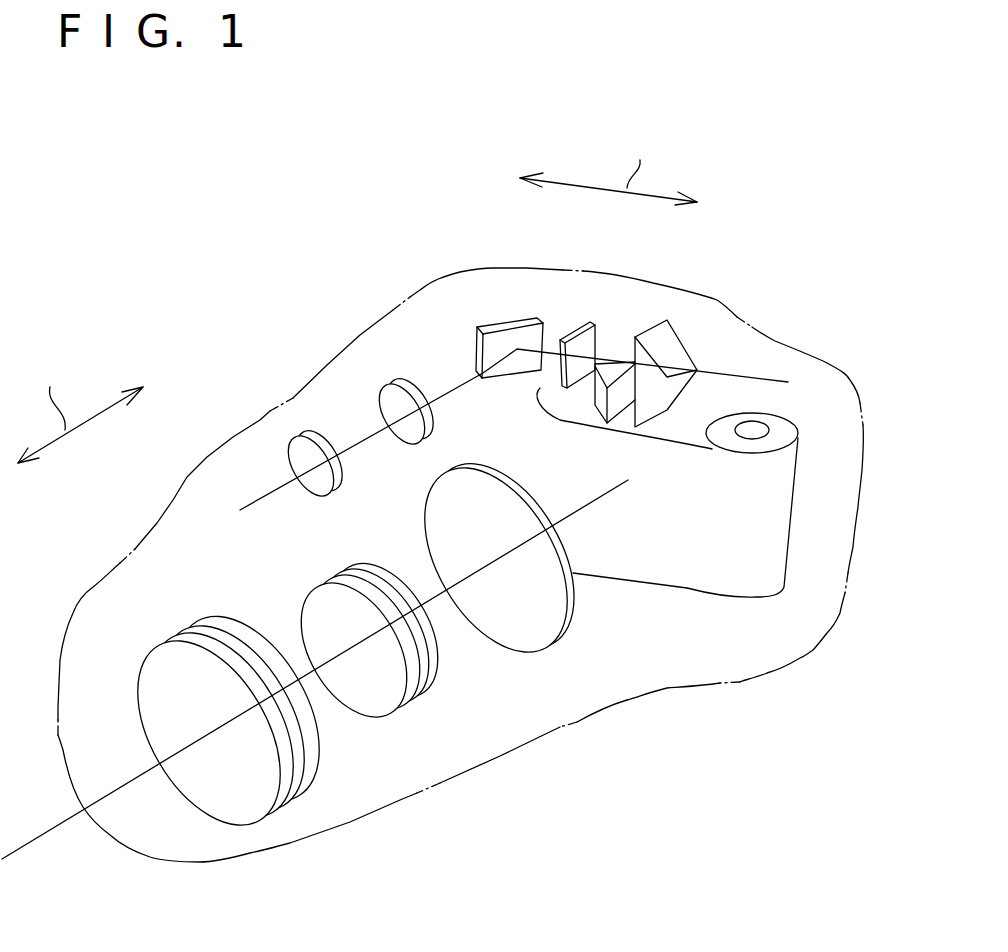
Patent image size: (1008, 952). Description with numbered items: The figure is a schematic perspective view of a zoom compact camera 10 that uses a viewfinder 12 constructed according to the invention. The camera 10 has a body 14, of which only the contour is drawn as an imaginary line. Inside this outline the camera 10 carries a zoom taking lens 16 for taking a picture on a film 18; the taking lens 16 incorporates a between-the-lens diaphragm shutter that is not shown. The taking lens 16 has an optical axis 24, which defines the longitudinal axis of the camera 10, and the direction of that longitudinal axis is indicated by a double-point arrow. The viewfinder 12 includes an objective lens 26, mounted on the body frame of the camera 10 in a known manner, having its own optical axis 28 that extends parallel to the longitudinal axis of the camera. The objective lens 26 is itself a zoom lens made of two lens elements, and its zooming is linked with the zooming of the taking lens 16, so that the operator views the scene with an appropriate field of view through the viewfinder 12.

The camera 10 is at (407, 835).
The viewfinder 12 is at (548, 310).
The body 14 is at (630, 701).
The zoom lens 16 is at (587, 628).
The film 18 is at (688, 555).
The optical axis 24 is at (33, 838).
The objective lens 26 is at (370, 321).
The optical axis 28 is at (242, 509).